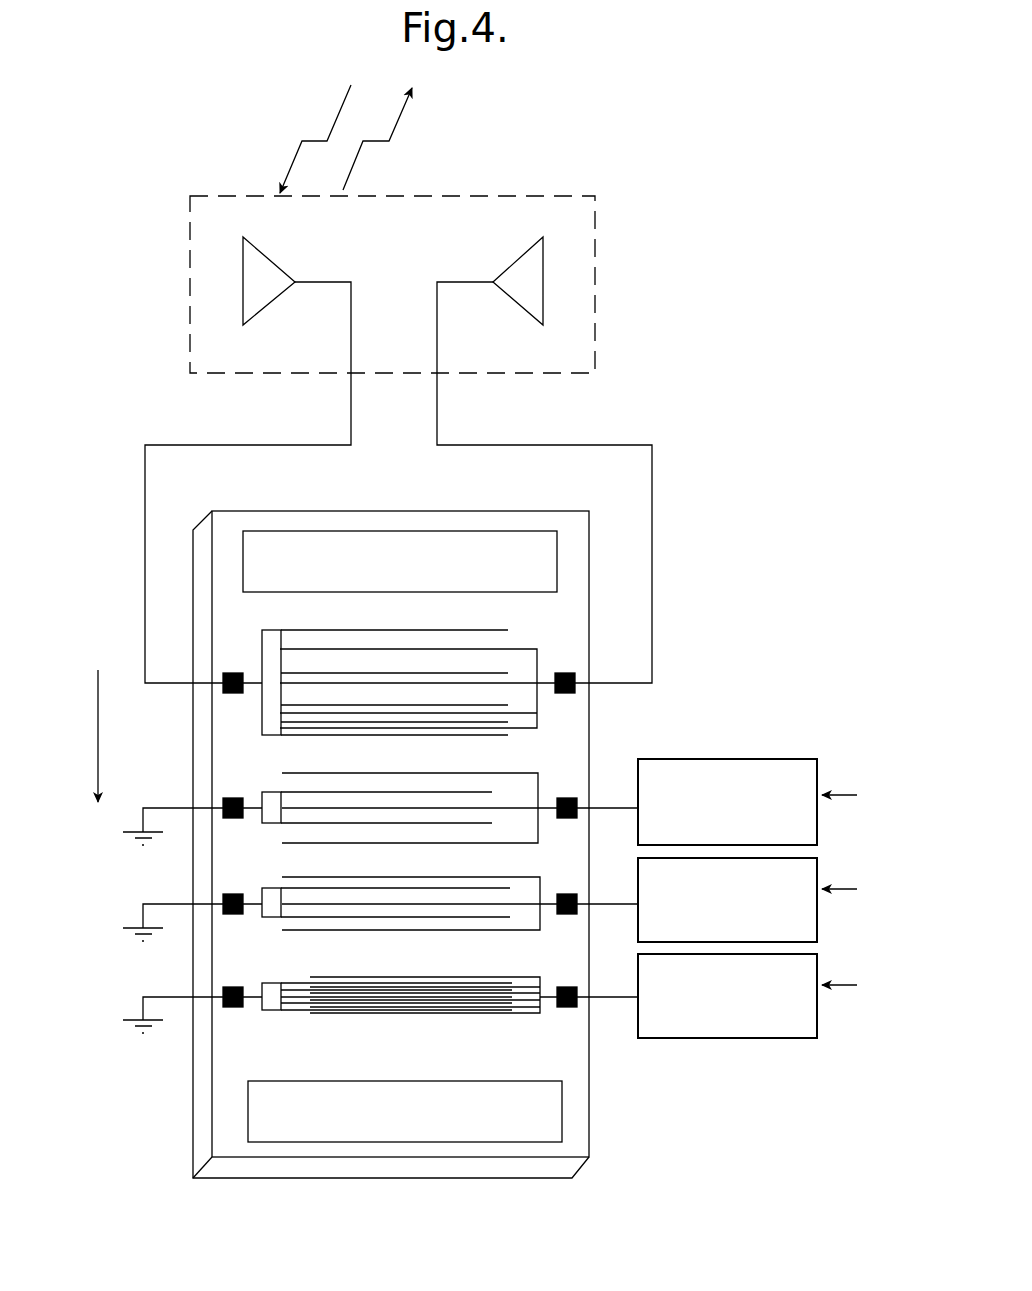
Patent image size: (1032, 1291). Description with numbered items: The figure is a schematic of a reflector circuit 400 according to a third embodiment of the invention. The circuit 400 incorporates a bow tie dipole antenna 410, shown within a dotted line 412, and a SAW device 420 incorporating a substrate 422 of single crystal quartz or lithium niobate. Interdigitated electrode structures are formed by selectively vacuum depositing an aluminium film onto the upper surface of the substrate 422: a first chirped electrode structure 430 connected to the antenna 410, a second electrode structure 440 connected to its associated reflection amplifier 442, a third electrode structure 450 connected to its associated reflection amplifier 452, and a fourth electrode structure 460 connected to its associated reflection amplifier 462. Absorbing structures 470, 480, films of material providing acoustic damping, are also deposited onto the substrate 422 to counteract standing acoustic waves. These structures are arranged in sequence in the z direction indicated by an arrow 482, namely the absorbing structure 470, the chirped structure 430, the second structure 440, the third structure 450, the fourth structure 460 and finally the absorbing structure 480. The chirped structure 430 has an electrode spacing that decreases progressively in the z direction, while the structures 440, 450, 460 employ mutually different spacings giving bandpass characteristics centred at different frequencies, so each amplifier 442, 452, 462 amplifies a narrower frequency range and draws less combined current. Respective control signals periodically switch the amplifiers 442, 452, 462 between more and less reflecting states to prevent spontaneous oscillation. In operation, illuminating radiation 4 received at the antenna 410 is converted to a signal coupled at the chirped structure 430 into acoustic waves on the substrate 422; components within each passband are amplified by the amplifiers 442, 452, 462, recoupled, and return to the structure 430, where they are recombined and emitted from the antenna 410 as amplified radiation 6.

The reflector circuit 400 is at (667, 165).
The illuminating radiation 4 is at (333, 122).
The amplified radiation 6 is at (397, 128).
The dotted line 412 is at (513, 196).
The bow tie dipole antenna 410 is at (573, 348).
The SAW device 420 is at (589, 720).
The substrate 422 is at (203, 1112).
The first chirped electrode structure 430 is at (527, 642).
The second electrode structure 440 is at (262, 790).
The third electrode structure 450 is at (270, 886).
The fourth electrode structure 460 is at (270, 982).
The reflection amplifier 442 is at (812, 759).
The reflection amplifier 452 is at (815, 875).
The reflection amplifier 462 is at (812, 1012).
The absorbing structure 470 is at (510, 540).
The absorbing structure 480 is at (522, 1087).
The arrow 482 is at (95, 708).